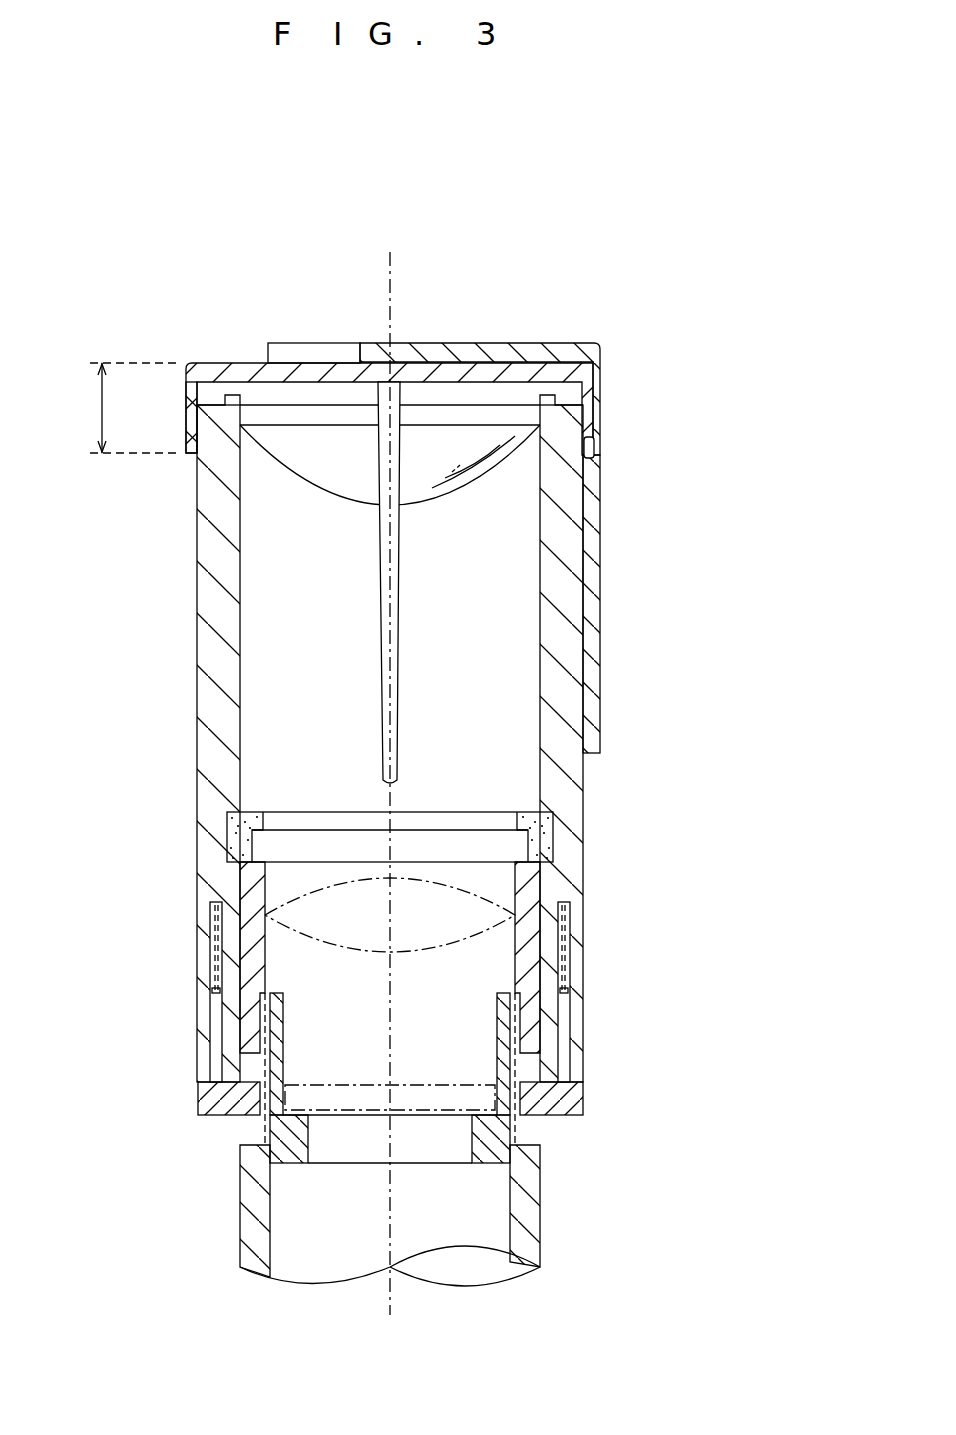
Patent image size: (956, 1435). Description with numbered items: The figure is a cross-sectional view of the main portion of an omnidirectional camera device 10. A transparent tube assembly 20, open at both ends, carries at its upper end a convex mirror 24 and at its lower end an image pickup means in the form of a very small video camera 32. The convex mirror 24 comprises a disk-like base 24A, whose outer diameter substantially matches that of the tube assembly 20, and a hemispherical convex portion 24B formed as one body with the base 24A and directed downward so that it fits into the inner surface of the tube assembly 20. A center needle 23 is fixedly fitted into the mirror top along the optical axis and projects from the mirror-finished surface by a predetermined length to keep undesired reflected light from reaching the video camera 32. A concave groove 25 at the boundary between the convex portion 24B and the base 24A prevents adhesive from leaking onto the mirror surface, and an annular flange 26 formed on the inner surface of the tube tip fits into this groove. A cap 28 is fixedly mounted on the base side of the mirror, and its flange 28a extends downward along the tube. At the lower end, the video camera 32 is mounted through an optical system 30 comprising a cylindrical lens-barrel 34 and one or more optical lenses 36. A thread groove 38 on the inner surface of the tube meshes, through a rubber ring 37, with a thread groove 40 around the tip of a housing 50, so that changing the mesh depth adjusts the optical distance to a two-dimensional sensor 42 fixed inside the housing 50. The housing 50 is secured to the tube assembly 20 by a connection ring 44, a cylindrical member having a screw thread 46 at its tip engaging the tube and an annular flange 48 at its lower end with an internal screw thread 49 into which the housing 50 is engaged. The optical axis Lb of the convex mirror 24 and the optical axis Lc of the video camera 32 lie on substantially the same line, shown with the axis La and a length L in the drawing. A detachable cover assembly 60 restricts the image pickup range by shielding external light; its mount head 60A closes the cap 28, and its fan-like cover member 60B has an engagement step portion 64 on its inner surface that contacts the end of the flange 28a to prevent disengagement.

The omnidirectional camera device 10 is at (418, 196).
The transparent tube assembly 20 is at (200, 572).
The center needle 23 is at (400, 637).
The convex mirror 24 is at (487, 487).
The base 24A is at (298, 395).
The convex portion 24B is at (300, 478).
The concave groove 25 is at (548, 395).
The annular flange 26 is at (228, 393).
The cap 28 is at (480, 372).
The flange 28a is at (190, 455).
The optical system 30 is at (292, 886).
The video camera 32 is at (226, 1222).
The lens-barrel 34 is at (530, 877).
The optical lens 36 is at (462, 858).
The rubber ring 37 is at (327, 812).
The thread groove 38 is at (530, 1003).
The thread groove 40 is at (496, 1028).
The two-dimensional sensor 42 is at (333, 1085).
The connection ring 44 is at (583, 1068).
The screw thread 46 is at (202, 968).
The annular flange 48 is at (232, 1100).
The screw thread 49 is at (535, 1098).
The housing 50 is at (540, 1220).
The cover assembly 60 is at (608, 562).
The mount head 60A is at (537, 344).
The cover member 60B is at (600, 680).
The engagement step portion 64 is at (595, 450).
The length L is at (131, 408).
The optical axis La is at (390, 278).
The optical axis Lb is at (393, 553).
The optical axis Lc is at (390, 1230).